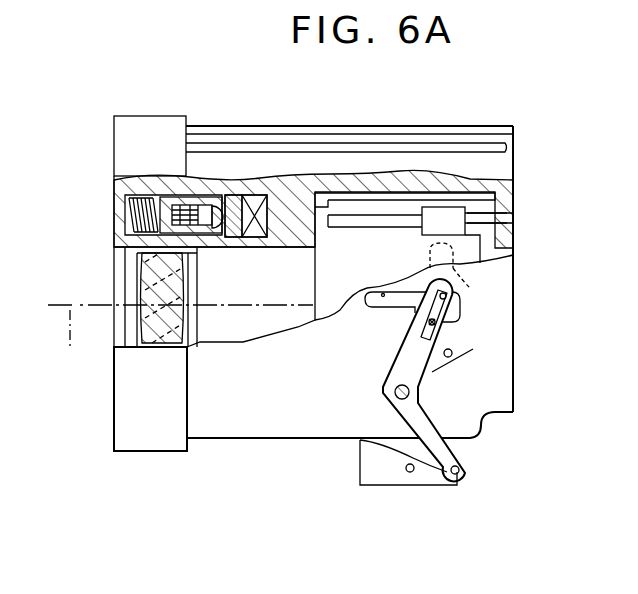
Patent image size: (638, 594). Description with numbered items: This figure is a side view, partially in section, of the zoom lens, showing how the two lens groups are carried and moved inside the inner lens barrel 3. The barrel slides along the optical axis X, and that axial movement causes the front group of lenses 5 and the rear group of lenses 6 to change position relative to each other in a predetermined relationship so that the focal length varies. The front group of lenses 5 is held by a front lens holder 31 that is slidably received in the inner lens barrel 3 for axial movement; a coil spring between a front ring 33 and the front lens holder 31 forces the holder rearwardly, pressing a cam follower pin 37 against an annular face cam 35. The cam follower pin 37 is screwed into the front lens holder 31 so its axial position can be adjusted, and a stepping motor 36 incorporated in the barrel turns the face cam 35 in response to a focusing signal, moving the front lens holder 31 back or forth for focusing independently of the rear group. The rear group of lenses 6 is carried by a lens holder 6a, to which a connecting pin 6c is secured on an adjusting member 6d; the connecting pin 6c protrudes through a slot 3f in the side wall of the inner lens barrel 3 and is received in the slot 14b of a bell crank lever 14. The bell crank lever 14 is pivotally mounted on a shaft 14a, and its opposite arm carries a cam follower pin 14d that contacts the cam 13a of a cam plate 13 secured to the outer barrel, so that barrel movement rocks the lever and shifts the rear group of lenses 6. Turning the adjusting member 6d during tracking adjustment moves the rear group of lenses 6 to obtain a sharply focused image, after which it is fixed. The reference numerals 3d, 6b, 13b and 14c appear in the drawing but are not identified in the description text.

The inner lens barrel 3 is at (140, 178).
The rod 3d is at (245, 145).
The slot 3f is at (384, 290).
The front group of lenses 5 is at (162, 350).
The rear group of lenses 6 is at (466, 286).
The lens holder 6a is at (470, 265).
The plate 6b is at (350, 224).
The connecting pin 6c is at (455, 306).
The adjusting member 6d is at (418, 316).
The cam plate 13 is at (370, 470).
The cam 13a is at (392, 440).
The hole 13b is at (410, 474).
The bell crank lever 14 is at (400, 362).
The shaft 14a is at (395, 393).
The slot 14b is at (443, 329).
The hole 14c is at (443, 375).
The cam follower pin 14d is at (465, 473).
The front lens holder 31 is at (207, 192).
The front ring 33 is at (126, 218).
The annular face cam 35 is at (236, 234).
The stepping motor 36 is at (261, 234).
The cam follower pin 37 is at (214, 224).
The optical axis X is at (180, 341).